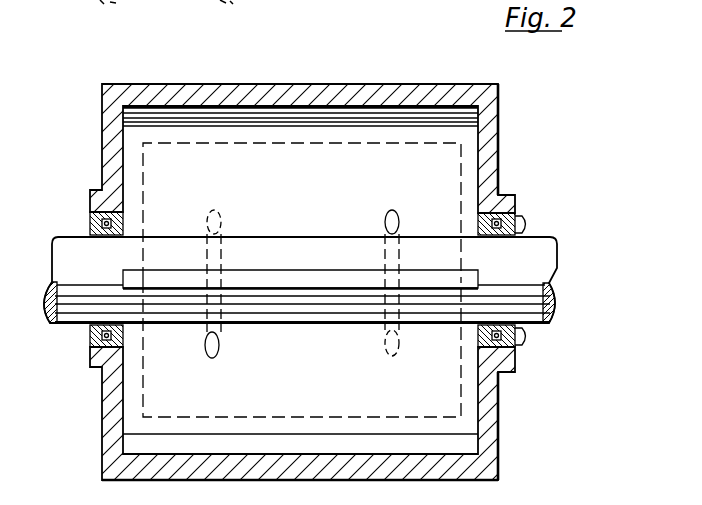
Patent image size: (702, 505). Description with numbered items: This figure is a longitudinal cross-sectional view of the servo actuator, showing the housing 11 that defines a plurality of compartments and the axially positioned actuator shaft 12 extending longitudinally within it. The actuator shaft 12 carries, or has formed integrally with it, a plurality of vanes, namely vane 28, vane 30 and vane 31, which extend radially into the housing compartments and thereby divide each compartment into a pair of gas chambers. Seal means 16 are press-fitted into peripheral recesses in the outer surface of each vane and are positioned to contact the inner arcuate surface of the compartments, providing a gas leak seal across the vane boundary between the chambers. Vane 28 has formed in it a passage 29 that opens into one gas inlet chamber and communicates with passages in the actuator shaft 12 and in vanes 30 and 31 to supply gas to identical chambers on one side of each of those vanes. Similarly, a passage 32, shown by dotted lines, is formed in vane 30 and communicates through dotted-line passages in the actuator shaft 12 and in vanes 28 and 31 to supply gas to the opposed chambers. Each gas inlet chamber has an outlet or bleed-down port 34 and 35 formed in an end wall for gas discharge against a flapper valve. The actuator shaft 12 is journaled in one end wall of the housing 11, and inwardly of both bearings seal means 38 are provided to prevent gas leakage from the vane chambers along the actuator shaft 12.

The housing 11 is at (502, 157).
The actuator shaft 12 is at (546, 265).
The seal means 16 is at (133, 163).
The vane 28 is at (296, 188).
The passage 29 is at (206, 215).
The vane 30 is at (302, 388).
The vane 31 is at (281, 271).
The passage 32 is at (398, 225).
The bleed-down port 34 is at (526, 342).
The bleed-down port 35 is at (526, 220).
The seal means 38 is at (489, 215).